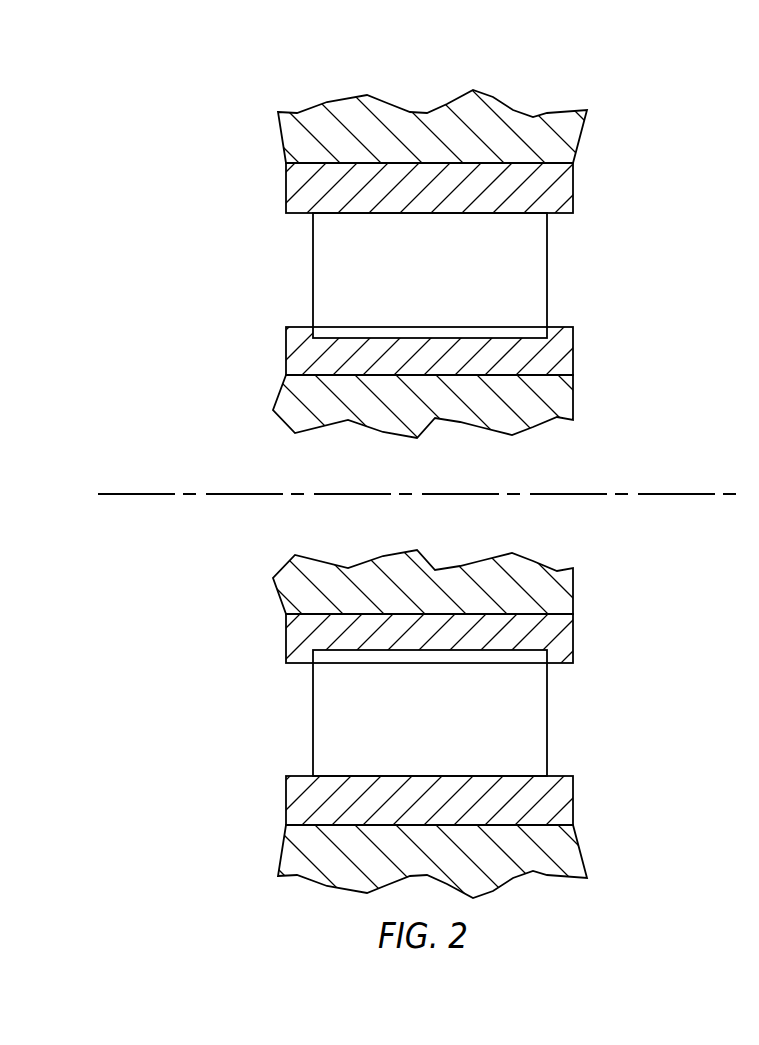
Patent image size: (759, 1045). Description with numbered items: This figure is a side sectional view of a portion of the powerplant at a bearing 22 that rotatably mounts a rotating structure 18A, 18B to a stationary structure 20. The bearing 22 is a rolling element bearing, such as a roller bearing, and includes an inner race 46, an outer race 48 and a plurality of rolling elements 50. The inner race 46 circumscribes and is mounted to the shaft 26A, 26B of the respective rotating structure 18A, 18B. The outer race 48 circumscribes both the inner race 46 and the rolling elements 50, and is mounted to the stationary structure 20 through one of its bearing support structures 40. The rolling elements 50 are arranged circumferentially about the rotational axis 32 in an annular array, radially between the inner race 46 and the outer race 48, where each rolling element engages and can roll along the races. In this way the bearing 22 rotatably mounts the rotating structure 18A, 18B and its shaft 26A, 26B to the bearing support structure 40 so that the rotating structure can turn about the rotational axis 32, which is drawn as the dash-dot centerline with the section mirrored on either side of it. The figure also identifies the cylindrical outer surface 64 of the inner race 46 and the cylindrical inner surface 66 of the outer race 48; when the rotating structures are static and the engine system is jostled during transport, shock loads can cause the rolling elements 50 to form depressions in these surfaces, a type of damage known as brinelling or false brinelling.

The stationary structure 20 is at (399, 242).
The bearing 22 is at (648, 260).
The bearing support structure 40 is at (580, 135).
The outer race 48 is at (575, 185).
The rolling elements 50 is at (548, 283).
The inner surface of the outer race 66 is at (343, 213).
The outer surface of the inner race 64 is at (342, 338).
The inner race 46 is at (575, 347).
The rotating structure 18A is at (399, 413).
The rotating structure 18B is at (399, 413).
The shaft 26A is at (399, 413).
The shaft 26B is at (533, 427).
The rotational axis 32 is at (736, 497).